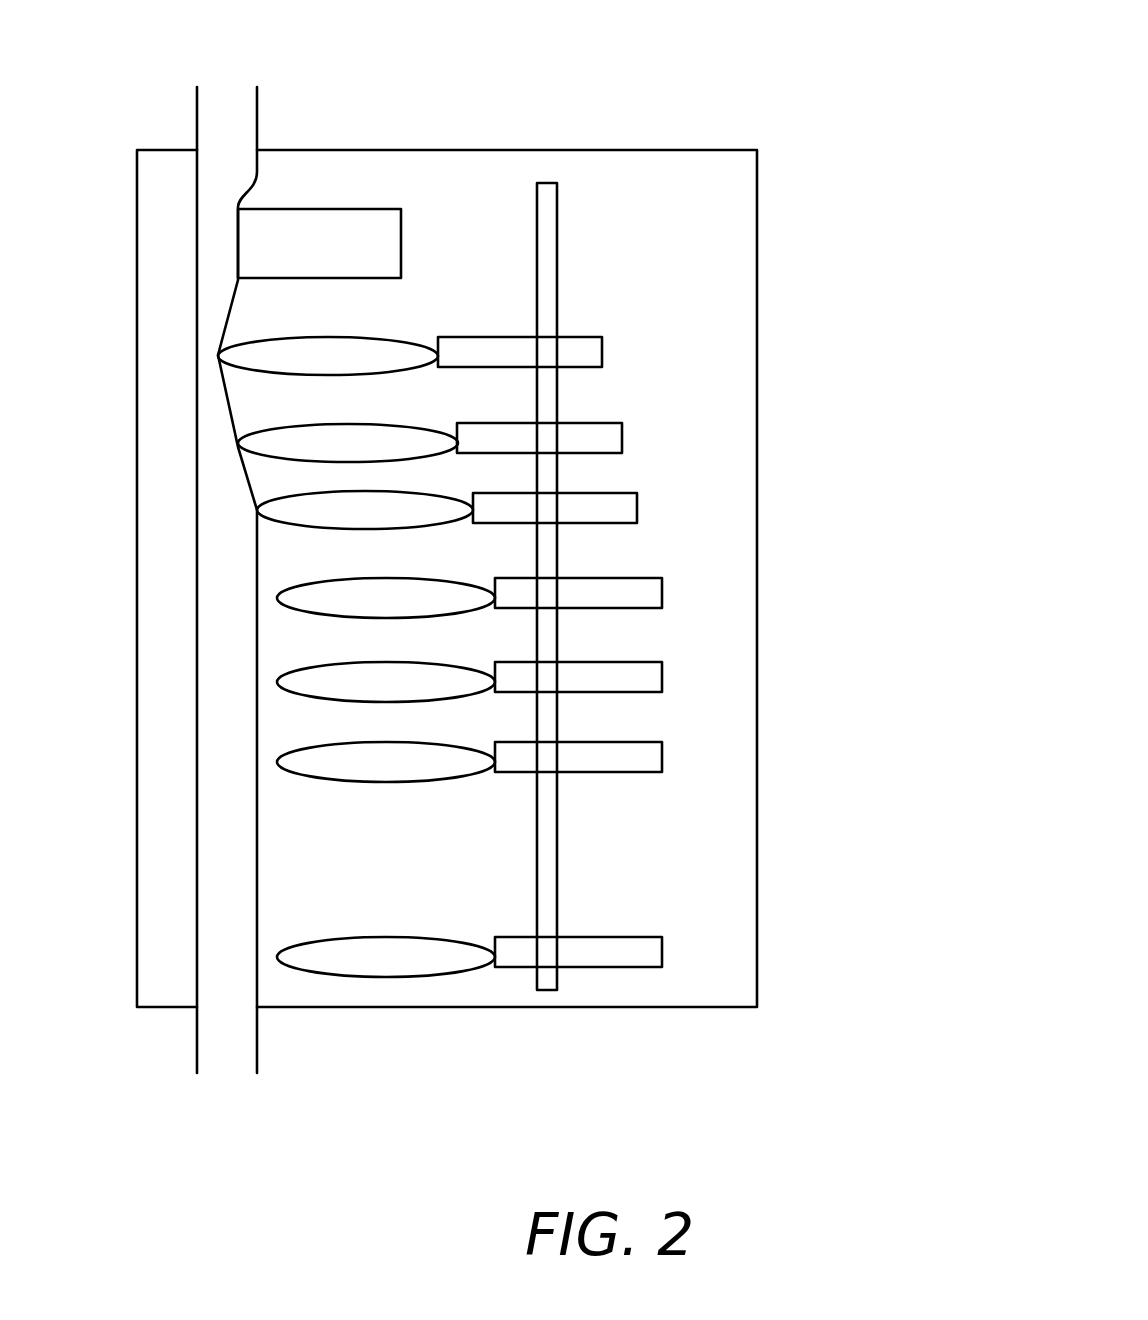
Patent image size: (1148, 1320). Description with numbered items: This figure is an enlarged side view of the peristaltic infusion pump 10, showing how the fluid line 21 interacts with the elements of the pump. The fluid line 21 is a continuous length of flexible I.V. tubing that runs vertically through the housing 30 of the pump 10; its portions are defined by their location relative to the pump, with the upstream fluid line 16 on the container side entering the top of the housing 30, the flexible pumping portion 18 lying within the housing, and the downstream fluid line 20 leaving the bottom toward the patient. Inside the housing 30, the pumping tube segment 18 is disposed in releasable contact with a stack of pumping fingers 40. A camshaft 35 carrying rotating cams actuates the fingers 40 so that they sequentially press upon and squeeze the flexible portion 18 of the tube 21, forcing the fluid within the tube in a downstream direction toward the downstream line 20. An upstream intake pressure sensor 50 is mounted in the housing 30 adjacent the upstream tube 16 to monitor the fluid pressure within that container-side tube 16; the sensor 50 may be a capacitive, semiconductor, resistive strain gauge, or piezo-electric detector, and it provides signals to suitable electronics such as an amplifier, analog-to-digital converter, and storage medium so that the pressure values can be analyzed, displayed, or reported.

The infusion pump 10 is at (694, 112).
The upstream fluid line 16 is at (258, 120).
The pumping tube segment 18 is at (268, 845).
The downstream fluid line 20 is at (268, 1060).
The fluid line 21 is at (185, 123).
The housing 30 is at (640, 1006).
The camshaft 35 is at (557, 278).
The pumping fingers 40 is at (328, 338).
The upstream intake pressure sensor 50 is at (401, 244).